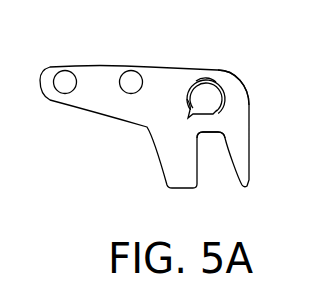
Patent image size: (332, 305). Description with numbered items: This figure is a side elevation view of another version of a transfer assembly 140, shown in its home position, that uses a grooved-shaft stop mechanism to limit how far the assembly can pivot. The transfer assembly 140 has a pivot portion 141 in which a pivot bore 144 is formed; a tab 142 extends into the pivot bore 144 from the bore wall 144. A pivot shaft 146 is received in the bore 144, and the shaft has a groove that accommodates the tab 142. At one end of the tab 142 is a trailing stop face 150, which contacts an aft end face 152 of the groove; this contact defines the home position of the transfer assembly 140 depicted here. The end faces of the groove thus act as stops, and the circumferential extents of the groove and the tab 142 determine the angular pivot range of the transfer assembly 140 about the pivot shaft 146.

The transfer assembly 140 is at (218, 43).
The pivot portion 141 is at (238, 101).
The tab 142 is at (216, 119).
The pivot bore 144 is at (187, 112).
The pivot shaft 146 is at (205, 84).
The trailing stop face 150 is at (213, 115).
The aft end face 152 is at (185, 103).